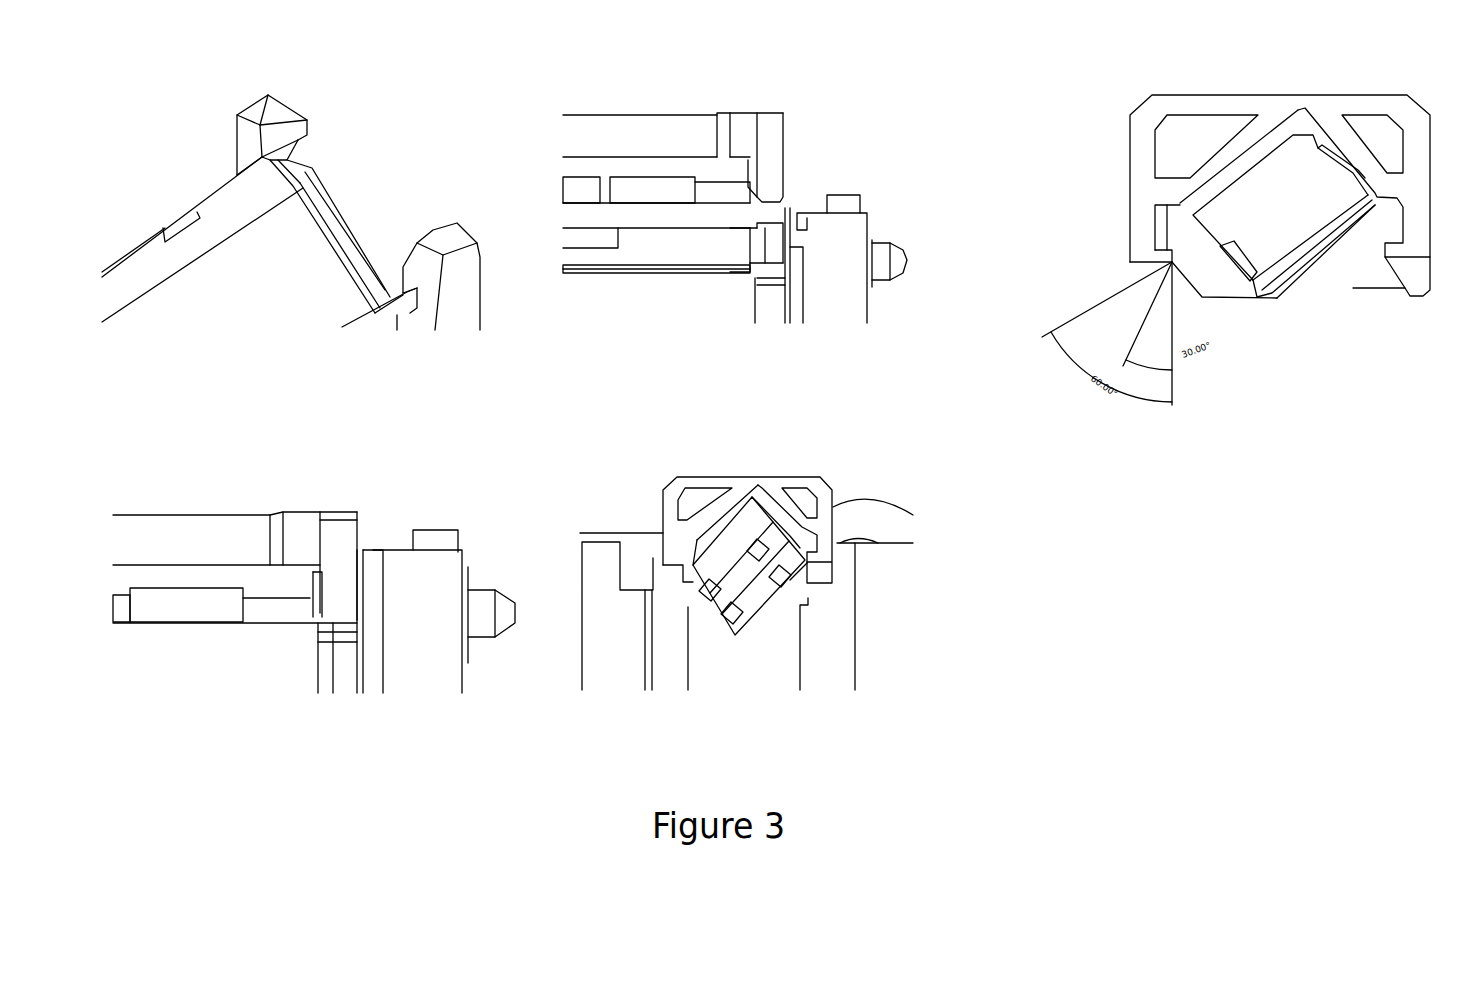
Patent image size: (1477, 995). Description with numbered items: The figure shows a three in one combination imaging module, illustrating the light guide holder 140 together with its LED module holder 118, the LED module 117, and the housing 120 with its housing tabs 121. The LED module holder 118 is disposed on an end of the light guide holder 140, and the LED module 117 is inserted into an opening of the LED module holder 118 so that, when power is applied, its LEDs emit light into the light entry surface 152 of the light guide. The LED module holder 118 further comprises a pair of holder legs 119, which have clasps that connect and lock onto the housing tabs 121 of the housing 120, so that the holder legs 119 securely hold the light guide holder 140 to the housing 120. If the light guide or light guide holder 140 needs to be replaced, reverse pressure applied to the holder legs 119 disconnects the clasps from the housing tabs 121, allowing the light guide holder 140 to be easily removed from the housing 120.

The LED module 117 is at (830, 612).
The LED module holder 118 is at (1289, 173).
The holder legs 119 is at (624, 392).
The housing 120 is at (684, 444).
The housing tabs 121 is at (820, 565).
The light guide holder 140 is at (750, 352).
The light entry surface 152 is at (1361, 224).